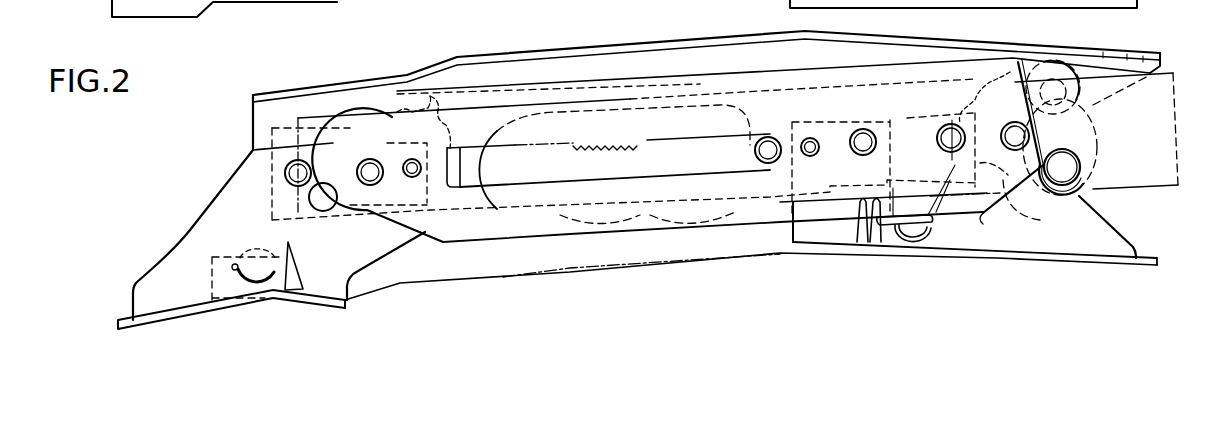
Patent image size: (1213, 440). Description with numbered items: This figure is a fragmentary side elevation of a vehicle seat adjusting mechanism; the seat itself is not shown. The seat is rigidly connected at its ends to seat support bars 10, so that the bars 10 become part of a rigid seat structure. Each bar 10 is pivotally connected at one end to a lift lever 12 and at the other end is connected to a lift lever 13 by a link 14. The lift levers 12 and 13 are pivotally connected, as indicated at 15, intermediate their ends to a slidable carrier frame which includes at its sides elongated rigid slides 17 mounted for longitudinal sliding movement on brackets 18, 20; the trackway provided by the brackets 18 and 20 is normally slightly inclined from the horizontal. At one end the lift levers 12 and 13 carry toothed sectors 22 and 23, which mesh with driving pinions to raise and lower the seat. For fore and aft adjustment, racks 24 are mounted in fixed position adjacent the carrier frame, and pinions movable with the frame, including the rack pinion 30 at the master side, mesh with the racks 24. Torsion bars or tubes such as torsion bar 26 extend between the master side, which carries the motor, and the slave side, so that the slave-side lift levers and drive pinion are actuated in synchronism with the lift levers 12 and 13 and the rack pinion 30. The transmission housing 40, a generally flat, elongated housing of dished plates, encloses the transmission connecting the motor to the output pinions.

The seat support bar 10 is at (1007, 52).
The lift lever 12 is at (355, 228).
The lift lever 13 is at (1033, 208).
The link 14 is at (1103, 120).
The pivot connection 15 is at (614, 4).
The elongated rigid slide 17 is at (316, 118).
The bracket 18 is at (218, 208).
The bracket 20 is at (1105, 222).
The toothed sector 22 is at (432, 92).
The toothed sector 23 is at (1036, 58).
The rack 24 is at (585, 148).
The torsion bar 26 is at (312, 198).
The rack pinion 30 is at (1067, 172).
The transmission housing 40 is at (990, 210).